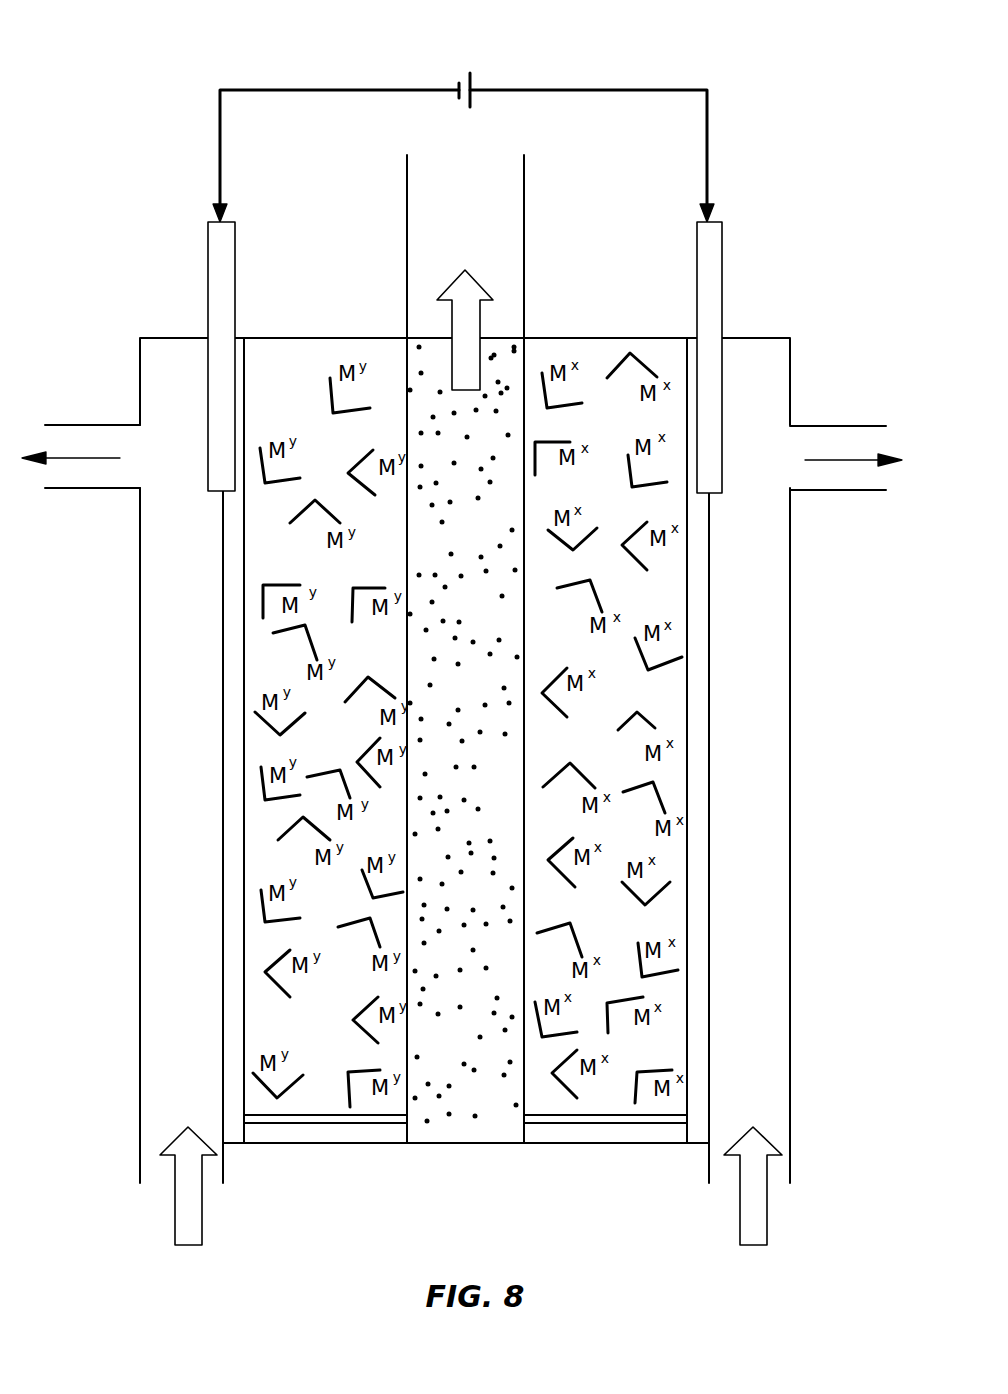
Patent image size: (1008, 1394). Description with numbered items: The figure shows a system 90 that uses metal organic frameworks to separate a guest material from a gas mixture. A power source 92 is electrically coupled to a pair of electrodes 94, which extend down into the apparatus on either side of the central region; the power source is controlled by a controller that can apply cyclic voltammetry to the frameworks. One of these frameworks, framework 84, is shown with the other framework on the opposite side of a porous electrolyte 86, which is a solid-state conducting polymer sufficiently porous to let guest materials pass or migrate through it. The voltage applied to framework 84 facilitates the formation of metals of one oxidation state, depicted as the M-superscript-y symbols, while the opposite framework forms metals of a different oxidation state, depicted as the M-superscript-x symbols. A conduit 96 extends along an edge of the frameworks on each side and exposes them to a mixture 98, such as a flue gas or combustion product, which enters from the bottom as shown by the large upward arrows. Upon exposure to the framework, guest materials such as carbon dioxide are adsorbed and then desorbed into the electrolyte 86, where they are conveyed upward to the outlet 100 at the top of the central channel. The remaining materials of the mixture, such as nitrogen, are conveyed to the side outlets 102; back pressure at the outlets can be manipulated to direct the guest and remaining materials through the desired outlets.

The framework 84 is at (338, 1108).
The electrolyte 86 is at (501, 393).
The system 90 is at (806, 226).
The power source 92 is at (474, 81).
The electrodes 94 is at (220, 248).
The conduit 96 is at (175, 1002).
The mixture 98 is at (187, 1235).
The outlet 100 is at (468, 316).
The outlets 102 is at (88, 443).